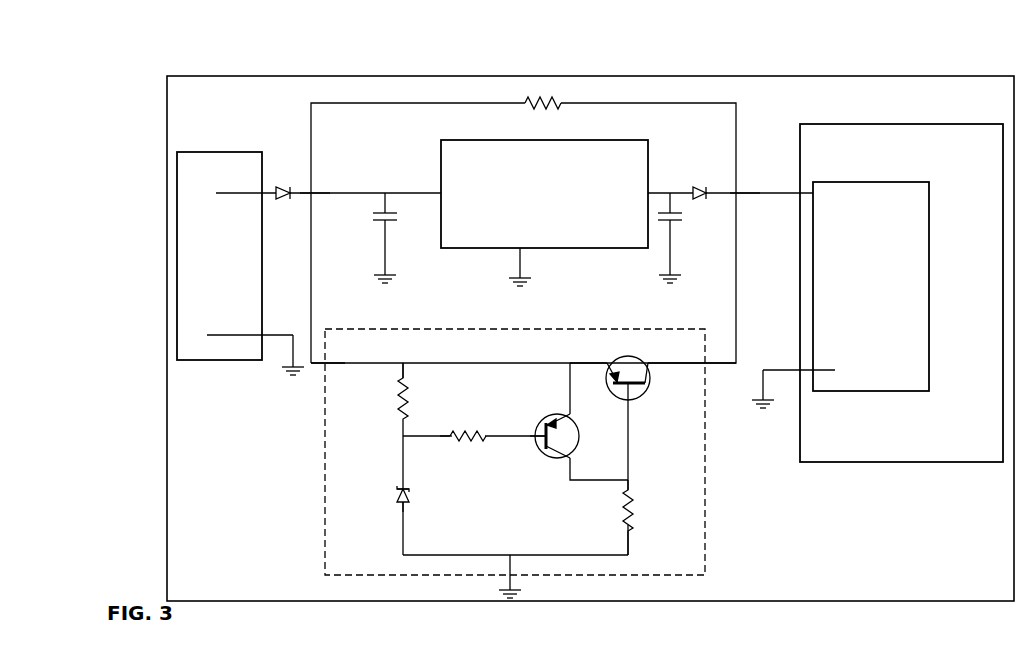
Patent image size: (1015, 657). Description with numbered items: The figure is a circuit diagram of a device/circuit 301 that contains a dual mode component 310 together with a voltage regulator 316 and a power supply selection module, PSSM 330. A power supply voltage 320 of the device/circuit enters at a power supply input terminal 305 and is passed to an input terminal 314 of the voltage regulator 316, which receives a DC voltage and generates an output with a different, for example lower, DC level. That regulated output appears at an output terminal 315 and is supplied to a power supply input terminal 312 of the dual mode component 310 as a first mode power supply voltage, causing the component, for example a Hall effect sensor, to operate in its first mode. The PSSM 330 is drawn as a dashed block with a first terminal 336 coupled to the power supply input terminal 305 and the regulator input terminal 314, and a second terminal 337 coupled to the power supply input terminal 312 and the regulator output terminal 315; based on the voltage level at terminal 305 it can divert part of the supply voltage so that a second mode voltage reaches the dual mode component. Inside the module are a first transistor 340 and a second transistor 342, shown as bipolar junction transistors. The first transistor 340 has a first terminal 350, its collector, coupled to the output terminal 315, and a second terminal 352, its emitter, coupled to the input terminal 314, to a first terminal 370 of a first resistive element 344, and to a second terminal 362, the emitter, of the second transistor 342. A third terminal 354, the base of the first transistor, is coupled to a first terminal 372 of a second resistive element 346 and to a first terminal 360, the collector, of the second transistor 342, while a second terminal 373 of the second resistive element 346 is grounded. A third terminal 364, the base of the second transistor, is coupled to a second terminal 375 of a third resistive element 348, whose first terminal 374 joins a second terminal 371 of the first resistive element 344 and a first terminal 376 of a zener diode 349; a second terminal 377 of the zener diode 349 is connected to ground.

The device/circuit 301 is at (737, 78).
The power supply input terminal 305 is at (219, 256).
The dual mode component 310 is at (901, 293).
The power supply input terminal 312 is at (871, 286).
The input terminal 314 is at (312, 192).
The output terminal 315 is at (739, 193).
The voltage regulator 316 is at (544, 194).
The power supply voltage 320 is at (283, 180).
The PSSM 330 is at (325, 433).
The first terminal 336 is at (325, 362).
The second terminal 337 is at (705, 363).
The first transistor 340 is at (630, 356).
The second transistor 342 is at (546, 413).
The first resistive element 344 is at (408, 394).
The second resistive element 346 is at (633, 505).
The third resistive element 348 is at (465, 440).
The zener diode 349 is at (400, 500).
The first terminal 350 is at (647, 362).
The second terminal 352 is at (607, 362).
The third terminal 354 is at (627, 402).
The first terminal 360 is at (570, 456).
The second terminal 362 is at (570, 419).
The third terminal 364 is at (533, 434).
The first terminal 370 is at (405, 372).
The second terminal 371 is at (404, 418).
The first terminal 372 is at (630, 489).
The second terminal 373 is at (631, 522).
The first terminal 374 is at (450, 437).
The second terminal 375 is at (486, 437).
The first terminal 376 is at (403, 488).
The second terminal 377 is at (404, 503).